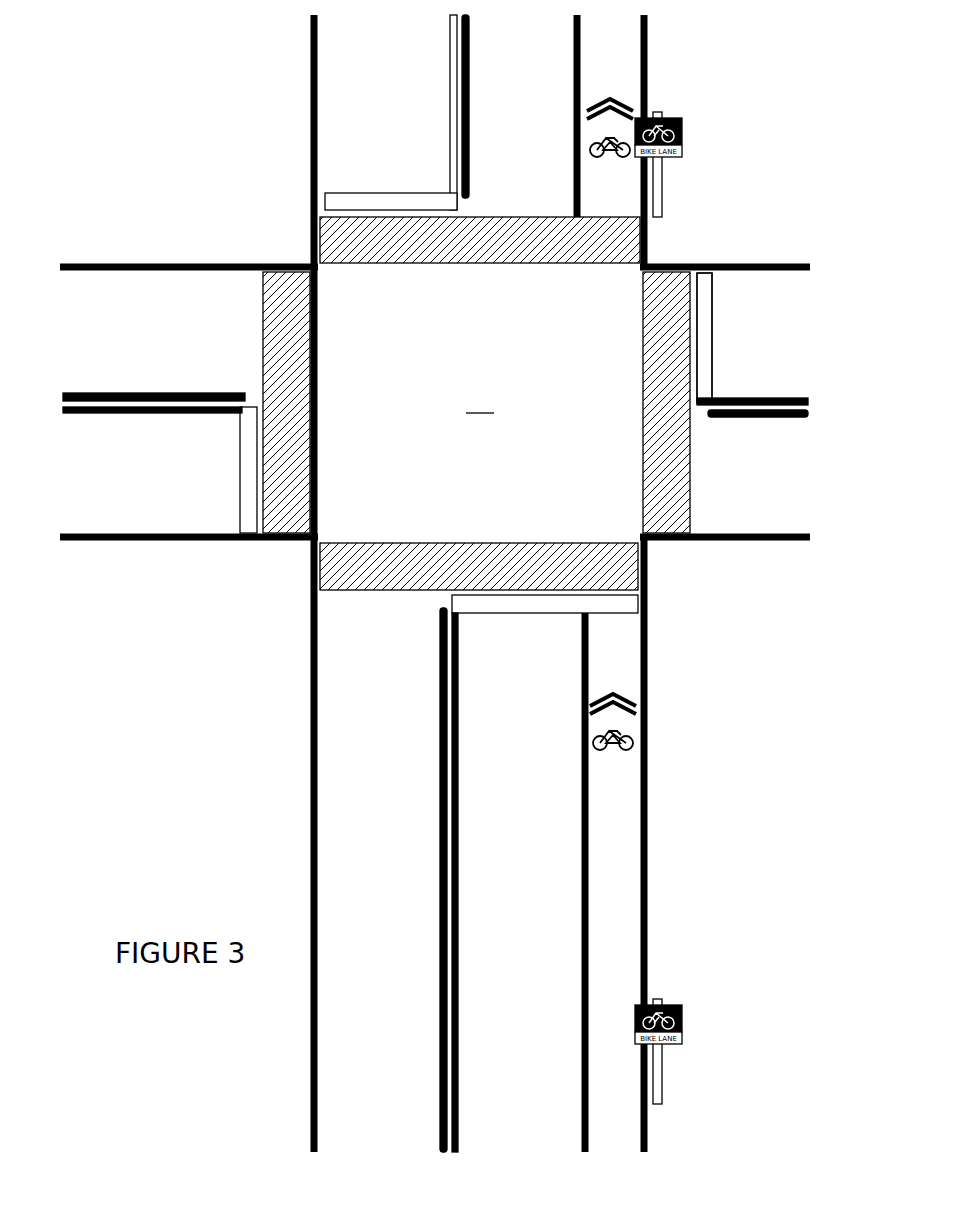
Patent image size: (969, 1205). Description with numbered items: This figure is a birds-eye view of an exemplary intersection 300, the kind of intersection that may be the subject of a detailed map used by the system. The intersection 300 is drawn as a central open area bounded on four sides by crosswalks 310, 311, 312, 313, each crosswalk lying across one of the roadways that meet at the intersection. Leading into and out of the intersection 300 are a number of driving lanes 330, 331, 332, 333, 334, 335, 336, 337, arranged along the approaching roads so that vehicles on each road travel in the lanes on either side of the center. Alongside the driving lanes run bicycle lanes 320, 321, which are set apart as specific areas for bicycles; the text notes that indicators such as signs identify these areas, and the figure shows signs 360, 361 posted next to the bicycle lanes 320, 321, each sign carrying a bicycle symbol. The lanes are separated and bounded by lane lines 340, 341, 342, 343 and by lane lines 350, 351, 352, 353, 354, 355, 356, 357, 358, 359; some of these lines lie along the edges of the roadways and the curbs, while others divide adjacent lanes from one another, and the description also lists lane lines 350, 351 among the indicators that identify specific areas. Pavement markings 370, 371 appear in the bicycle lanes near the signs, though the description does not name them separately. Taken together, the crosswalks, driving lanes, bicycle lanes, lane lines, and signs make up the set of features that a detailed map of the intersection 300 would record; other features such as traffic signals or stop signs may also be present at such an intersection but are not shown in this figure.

The intersection 300 is at (480, 403).
The crosswalk 310 is at (318, 248).
The crosswalk 311 is at (690, 512).
The crosswalk 312 is at (318, 576).
The crosswalk 313 is at (263, 498).
The bicycle lane 320 is at (613, 805).
The bicycle lane 321 is at (612, 30).
The driving lane 330 is at (520, 192).
The driving lane 331 is at (727, 335).
The driving lane 332 is at (723, 465).
The driving lane 333 is at (512, 787).
The driving lane 334 is at (390, 790).
The driving lane 335 is at (197, 465).
The driving lane 336 is at (195, 345).
The driving lane 337 is at (340, 167).
The lane line 340 is at (450, 102).
The lane line 341 is at (725, 395).
The lane line 342 is at (440, 733).
The lane line 343 is at (178, 393).
The lane line 350 is at (572, 80).
The lane line 351 is at (650, 72).
The lane line 352 is at (712, 268).
The lane line 353 is at (715, 540).
The lane line 354 is at (648, 663).
The lane line 355 is at (582, 680).
The lane line 356 is at (314, 700).
The lane line 357 is at (197, 537).
The lane line 358 is at (195, 268).
The lane line 359 is at (314, 72).
The sign 360 is at (684, 1020).
The sign 361 is at (684, 133).
The bicycle lane marking 370 is at (590, 748).
The bicycle lane marking 371 is at (590, 158).